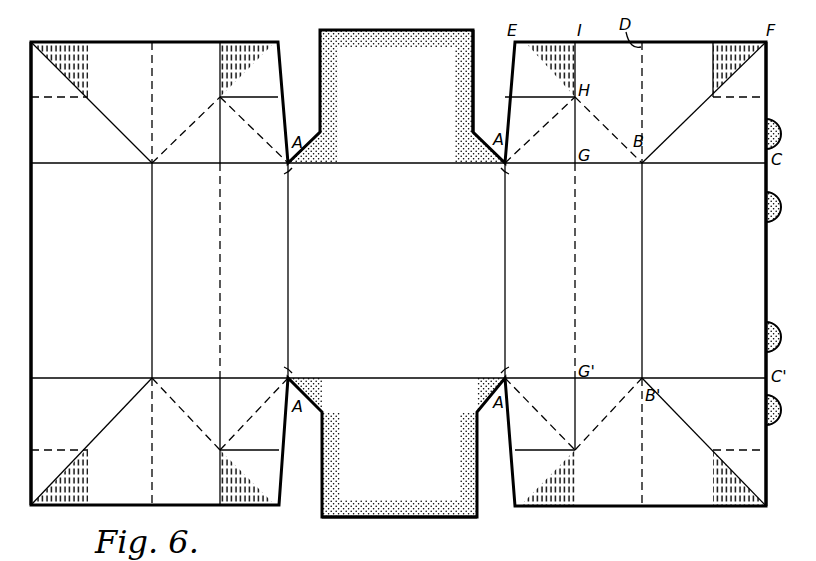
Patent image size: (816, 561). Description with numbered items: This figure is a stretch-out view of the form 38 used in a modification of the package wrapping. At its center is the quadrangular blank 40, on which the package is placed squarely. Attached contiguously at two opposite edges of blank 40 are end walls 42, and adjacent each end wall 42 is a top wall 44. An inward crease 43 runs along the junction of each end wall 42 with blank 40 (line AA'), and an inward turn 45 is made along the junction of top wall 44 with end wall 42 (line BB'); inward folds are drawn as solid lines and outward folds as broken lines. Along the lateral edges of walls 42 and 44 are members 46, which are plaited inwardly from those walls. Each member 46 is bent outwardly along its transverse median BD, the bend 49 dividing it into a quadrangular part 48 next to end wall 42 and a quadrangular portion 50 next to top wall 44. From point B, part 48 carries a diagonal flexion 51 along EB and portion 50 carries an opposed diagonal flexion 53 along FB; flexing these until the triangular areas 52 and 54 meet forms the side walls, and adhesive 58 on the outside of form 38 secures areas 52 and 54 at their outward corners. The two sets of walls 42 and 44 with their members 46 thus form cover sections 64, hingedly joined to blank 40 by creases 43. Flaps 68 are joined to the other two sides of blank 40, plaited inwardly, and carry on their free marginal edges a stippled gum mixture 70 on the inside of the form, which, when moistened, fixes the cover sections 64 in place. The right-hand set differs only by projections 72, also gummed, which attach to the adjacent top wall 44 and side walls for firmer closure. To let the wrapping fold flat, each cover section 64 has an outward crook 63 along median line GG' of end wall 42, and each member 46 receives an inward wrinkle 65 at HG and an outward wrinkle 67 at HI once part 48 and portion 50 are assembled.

The form 38 is at (398, 282).
The quadrangular blank 40 is at (398, 270).
The end walls 42 is at (397, 274).
The crease 43 is at (289, 312).
The top walls 44 is at (370, 273).
The turn 45 is at (153, 352).
The members 46 is at (398, 278).
The quadrangular part 48 is at (540, 273).
The bend 49 is at (661, 84).
The quadrangular portion 50 is at (729, 141).
The diagonal flexion 51 is at (552, 70).
The area 52 is at (608, 262).
The diagonal flexion 53 is at (733, 76).
The area 54 is at (682, 59).
The adhesive 58 is at (535, 43).
The outward crook 63 is at (576, 286).
The cover sections 64 is at (785, 274).
The inward wrinkle 65 is at (576, 122).
The outward wrinkle 67 is at (576, 73).
The flaps 68 is at (396, 273).
The gum mixture 70 is at (470, 62).
The projections 72 is at (782, 274).